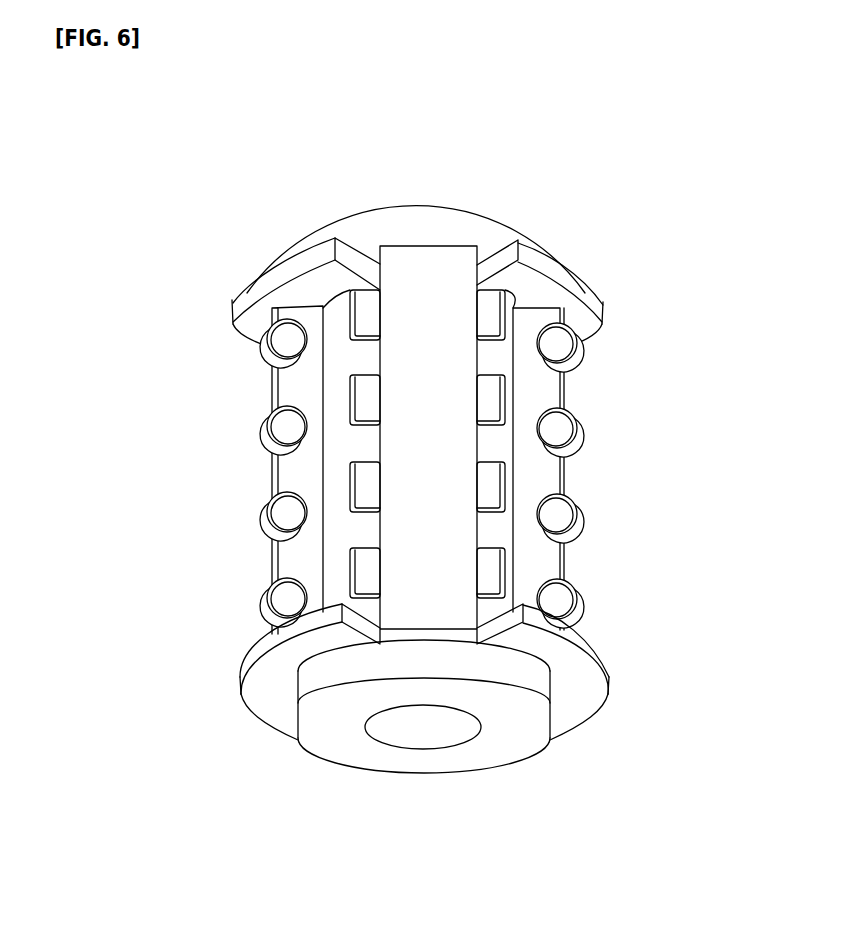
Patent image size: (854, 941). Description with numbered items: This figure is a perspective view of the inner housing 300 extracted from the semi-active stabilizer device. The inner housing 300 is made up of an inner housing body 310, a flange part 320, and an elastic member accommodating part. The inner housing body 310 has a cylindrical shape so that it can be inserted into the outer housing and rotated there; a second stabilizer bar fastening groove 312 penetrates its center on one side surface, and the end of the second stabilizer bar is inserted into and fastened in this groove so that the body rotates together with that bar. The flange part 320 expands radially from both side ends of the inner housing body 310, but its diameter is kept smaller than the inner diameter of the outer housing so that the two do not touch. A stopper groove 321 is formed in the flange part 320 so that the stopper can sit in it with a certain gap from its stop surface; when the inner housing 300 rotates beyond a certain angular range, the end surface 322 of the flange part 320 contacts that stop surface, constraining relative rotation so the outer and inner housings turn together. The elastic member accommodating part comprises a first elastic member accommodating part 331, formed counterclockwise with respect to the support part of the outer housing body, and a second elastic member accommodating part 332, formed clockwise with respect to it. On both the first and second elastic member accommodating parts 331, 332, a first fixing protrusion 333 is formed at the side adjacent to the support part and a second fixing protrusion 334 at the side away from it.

The inner housing 300 is at (613, 146).
The inner housing body 310 is at (353, 755).
The second stabilizer bar fastening groove 312 is at (420, 727).
The flange part 320 is at (569, 696).
The stopper groove 321 is at (434, 623).
The end surface 322 is at (342, 606).
The first elastic member accommodating part 331 is at (333, 465).
The second elastic member accommodating part 332 is at (492, 436).
The first fixing protrusion 333 is at (282, 338).
The second fixing protrusion 334 is at (364, 398).